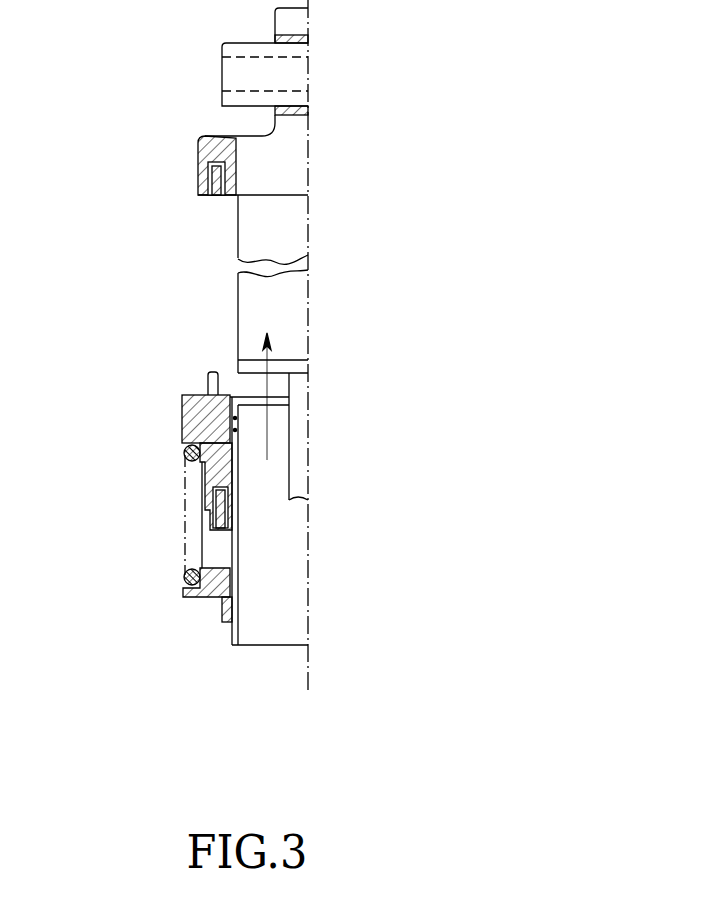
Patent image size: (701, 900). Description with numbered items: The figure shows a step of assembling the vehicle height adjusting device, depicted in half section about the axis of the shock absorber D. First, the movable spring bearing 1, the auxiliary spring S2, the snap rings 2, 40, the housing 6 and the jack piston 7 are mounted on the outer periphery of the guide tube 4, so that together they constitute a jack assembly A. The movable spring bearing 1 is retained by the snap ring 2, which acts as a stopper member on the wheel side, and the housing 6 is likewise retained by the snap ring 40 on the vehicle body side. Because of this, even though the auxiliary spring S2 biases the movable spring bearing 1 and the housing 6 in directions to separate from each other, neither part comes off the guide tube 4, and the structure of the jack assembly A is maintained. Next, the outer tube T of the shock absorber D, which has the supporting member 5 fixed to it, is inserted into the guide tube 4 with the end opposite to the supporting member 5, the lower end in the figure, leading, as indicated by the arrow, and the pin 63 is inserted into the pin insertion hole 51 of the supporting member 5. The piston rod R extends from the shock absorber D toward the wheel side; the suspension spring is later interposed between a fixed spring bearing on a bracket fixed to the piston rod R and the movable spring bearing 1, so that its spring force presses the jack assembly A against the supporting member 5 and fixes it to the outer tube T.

The movable spring bearing 1 is at (193, 598).
The snap ring 2 is at (228, 622).
The guide tube 4 is at (232, 578).
The supporting member 5 is at (198, 148).
The pin insertion hole 51 is at (214, 185).
The housing 6 is at (182, 397).
The pin 63 is at (208, 372).
The jack piston 7 is at (222, 505).
The snap ring 40 is at (232, 418).
The auxiliary spring S2 is at (185, 455).
The jack assembly A is at (160, 540).
The shock absorber D is at (228, 238).
The piston rod R is at (300, 418).
The outer tube T is at (285, 238).